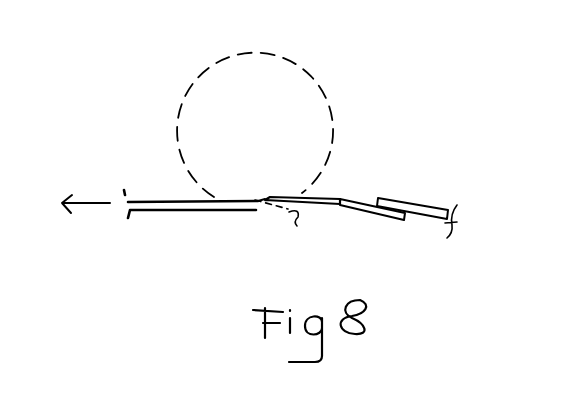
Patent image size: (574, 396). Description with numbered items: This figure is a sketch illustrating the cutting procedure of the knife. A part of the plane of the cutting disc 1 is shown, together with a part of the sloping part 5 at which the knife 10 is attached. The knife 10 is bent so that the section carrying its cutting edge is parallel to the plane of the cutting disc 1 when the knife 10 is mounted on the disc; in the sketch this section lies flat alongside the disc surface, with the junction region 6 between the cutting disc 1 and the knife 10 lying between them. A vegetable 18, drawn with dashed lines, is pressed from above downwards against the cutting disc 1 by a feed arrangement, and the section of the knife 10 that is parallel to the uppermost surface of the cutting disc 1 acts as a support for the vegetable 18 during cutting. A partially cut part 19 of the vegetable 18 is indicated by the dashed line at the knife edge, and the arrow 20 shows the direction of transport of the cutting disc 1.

The cutting disc 1 is at (173, 211).
The sloping part 5 is at (420, 200).
The strip end 6 is at (251, 206).
The knife 10 is at (336, 195).
The vegetable 18 is at (301, 83).
The partially cut part of the vegetable 19 is at (297, 228).
The arrow 20 is at (87, 197).